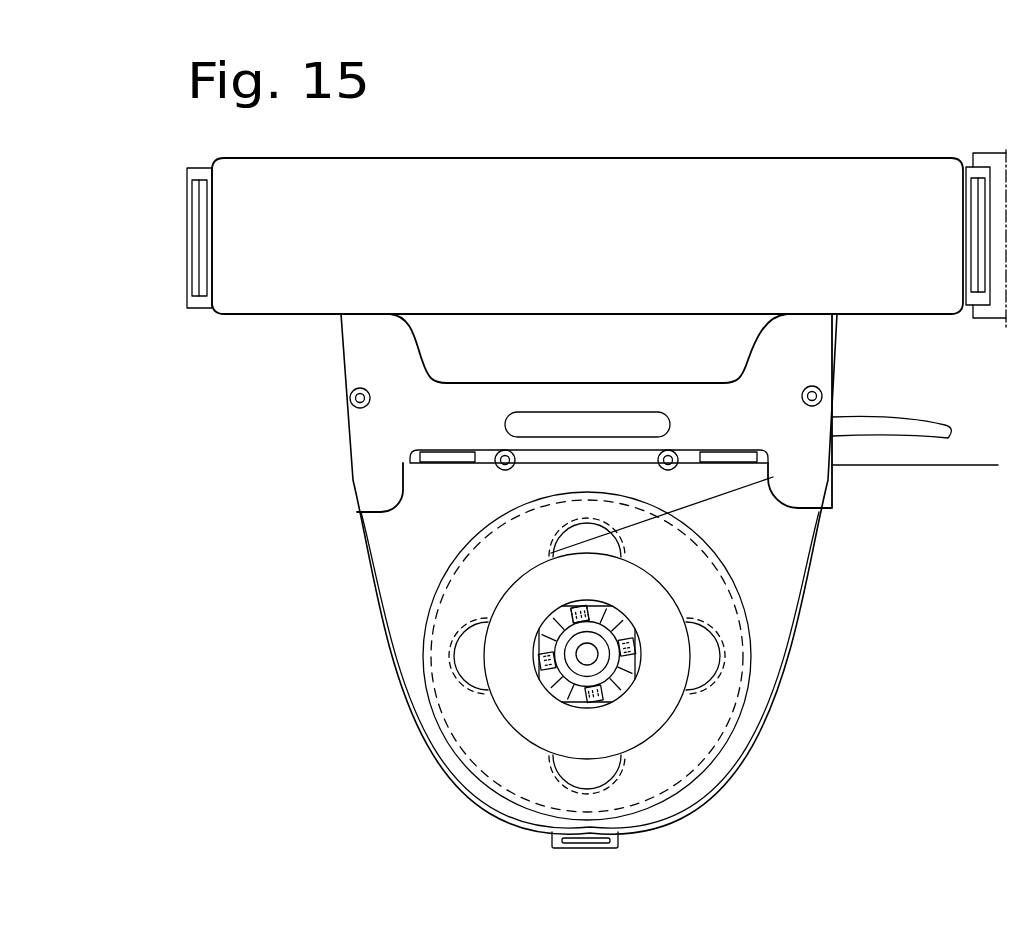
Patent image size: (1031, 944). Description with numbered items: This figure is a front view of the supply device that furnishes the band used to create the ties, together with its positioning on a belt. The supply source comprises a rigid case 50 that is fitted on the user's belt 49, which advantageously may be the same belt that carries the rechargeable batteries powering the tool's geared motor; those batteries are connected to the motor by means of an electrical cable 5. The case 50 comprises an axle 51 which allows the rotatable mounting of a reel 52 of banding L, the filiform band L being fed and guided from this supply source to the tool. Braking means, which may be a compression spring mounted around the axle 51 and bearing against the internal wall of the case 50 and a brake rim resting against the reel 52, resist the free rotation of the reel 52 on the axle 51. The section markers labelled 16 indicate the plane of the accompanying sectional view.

The section line 16- 16 is at (585, 150).
The user's belt 49 is at (992, 155).
The electrical cable 5 is at (905, 425).
The filiform band L is at (738, 495).
The rigid case 50 is at (378, 607).
The axle 51 is at (587, 654).
The reel 52 is at (513, 697).